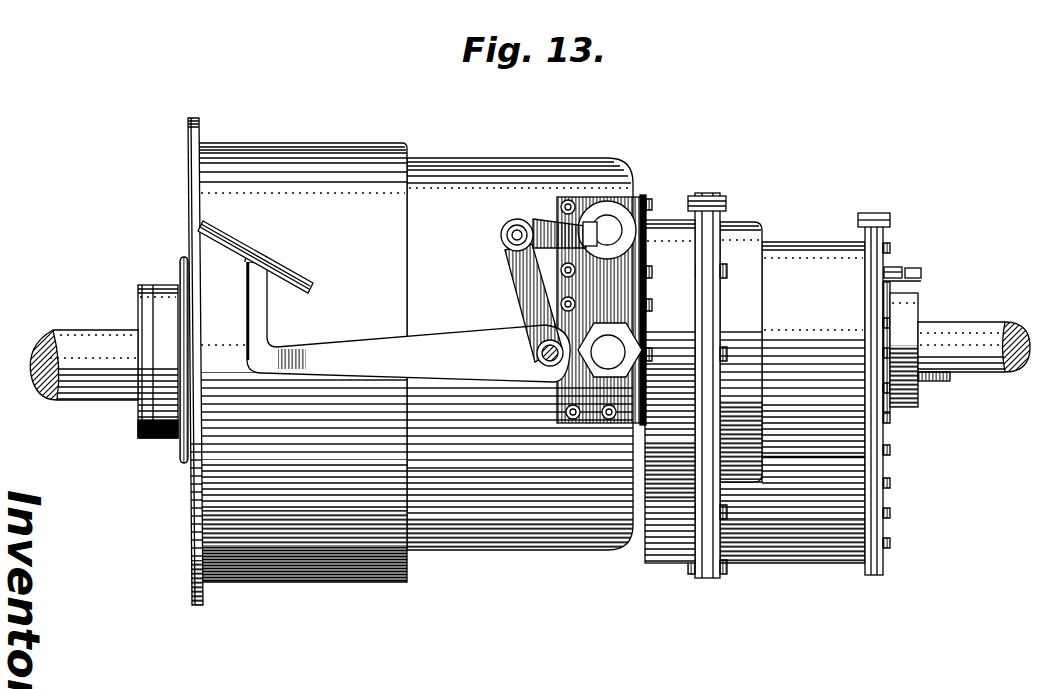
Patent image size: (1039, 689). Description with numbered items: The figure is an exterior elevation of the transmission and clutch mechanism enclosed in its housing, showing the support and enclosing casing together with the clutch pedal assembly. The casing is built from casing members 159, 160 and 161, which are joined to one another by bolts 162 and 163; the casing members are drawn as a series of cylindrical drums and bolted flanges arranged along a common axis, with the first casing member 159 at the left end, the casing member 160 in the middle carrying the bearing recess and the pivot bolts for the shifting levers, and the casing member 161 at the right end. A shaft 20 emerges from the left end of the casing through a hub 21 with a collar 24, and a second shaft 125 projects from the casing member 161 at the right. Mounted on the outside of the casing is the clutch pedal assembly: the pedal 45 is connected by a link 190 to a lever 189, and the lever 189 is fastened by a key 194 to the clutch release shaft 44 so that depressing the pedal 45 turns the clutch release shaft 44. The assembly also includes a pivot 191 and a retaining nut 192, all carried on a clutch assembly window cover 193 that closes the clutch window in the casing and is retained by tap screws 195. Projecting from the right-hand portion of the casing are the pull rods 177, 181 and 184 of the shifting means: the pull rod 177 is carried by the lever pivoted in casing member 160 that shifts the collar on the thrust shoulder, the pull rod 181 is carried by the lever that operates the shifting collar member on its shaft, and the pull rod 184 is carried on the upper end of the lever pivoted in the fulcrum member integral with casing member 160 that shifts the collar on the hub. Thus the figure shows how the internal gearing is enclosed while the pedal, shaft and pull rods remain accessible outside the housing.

The shaft 20 is at (58, 340).
The bearing hub 21 is at (138, 297).
The collar 24 is at (142, 430).
The casing member 159 is at (317, 160).
The pedal 45 is at (333, 353).
The lever 189 is at (509, 238).
The link 190 is at (530, 288).
The key 194 is at (584, 231).
The tap screws 195 is at (574, 204).
The clutch release shaft 44 is at (614, 234).
The clutch assembly window cover 193 is at (623, 283).
The pivot 191 is at (606, 348).
The retaining nut 192 is at (644, 330).
The bolts 162 is at (722, 218).
The casing member 160 is at (841, 229).
The bolts 163 is at (887, 217).
The pull rod 177 is at (893, 270).
The pull rod 181 is at (921, 274).
The casing member 161 is at (913, 318).
The shaft 125 is at (1006, 354).
The pull rod 184 is at (933, 381).